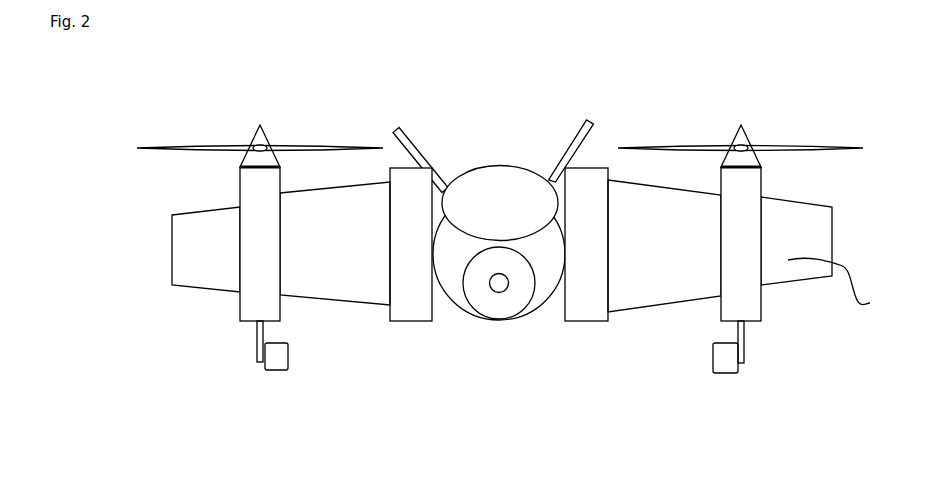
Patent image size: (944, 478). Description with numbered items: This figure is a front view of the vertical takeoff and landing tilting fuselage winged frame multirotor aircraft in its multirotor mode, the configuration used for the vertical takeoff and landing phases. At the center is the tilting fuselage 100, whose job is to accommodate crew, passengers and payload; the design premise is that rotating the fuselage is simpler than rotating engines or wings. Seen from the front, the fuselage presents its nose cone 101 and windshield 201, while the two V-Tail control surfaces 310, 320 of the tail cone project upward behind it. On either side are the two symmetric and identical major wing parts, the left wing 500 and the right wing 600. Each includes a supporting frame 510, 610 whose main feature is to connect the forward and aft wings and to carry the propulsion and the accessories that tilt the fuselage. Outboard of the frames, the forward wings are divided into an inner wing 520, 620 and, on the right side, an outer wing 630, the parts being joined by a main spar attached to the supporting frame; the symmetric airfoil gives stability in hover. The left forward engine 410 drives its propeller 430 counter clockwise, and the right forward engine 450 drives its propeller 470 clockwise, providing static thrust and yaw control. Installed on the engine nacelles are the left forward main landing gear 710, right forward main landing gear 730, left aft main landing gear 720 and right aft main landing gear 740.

The tilting fuselage 100 is at (525, 323).
The nose cone 101 is at (499, 302).
The windshield 201 is at (497, 182).
The V-Tail control surface 310 is at (578, 130).
The V-Tail control surface 320 is at (412, 138).
The left forward engine 410 is at (742, 198).
The propeller 430 is at (810, 142).
The right forward engine 450 is at (258, 193).
The propeller 470 is at (212, 150).
The left wing 500 is at (595, 152).
The supporting frame 510 is at (578, 302).
The inner wing 520 is at (647, 262).
The right wing 600 is at (395, 160).
The supporting frame 610 is at (412, 305).
The inner wing 620 is at (353, 262).
The outer wing 630 is at (220, 250).
The left forward main landing gear 710 is at (740, 355).
The left aft main landing gear 720 is at (713, 362).
The right forward main landing gear 730 is at (265, 360).
The right aft main landing gear 740 is at (288, 355).